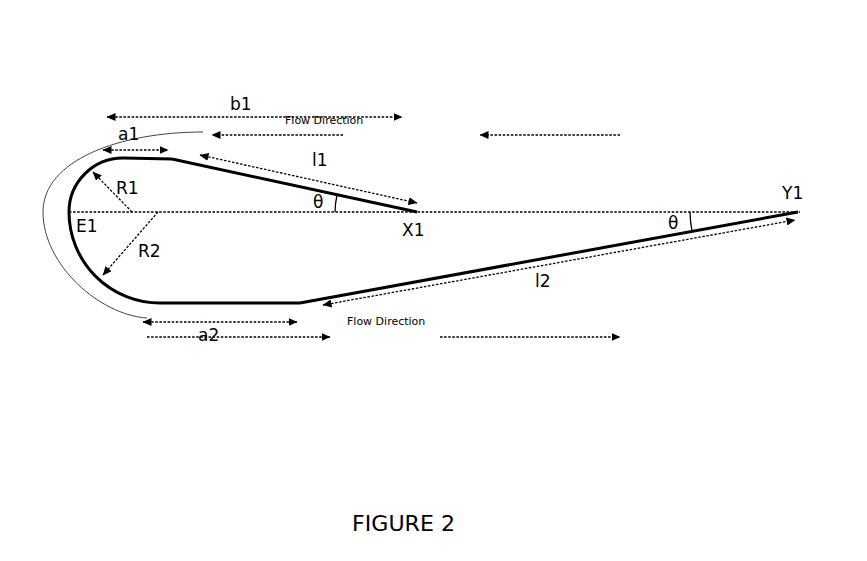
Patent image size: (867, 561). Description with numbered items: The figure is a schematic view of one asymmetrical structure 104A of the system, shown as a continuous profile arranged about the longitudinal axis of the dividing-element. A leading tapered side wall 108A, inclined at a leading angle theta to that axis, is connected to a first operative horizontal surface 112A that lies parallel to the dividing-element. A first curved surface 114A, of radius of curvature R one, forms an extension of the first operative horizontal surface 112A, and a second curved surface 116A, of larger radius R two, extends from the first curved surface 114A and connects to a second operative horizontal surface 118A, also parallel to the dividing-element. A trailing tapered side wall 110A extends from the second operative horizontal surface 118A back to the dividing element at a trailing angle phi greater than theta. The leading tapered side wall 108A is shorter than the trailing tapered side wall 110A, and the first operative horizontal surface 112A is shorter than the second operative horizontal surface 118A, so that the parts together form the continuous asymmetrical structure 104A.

The asymmetrical structure 104A is at (685, 105).
The leading tapered side wall 108A is at (300, 180).
The trailing tapered side wall 110A is at (510, 268).
The first operative horizontal surface 112A is at (142, 158).
The first curved surface 114A is at (72, 173).
The second curved surface 116A is at (78, 272).
The second operative horizontal surface 118A is at (230, 306).